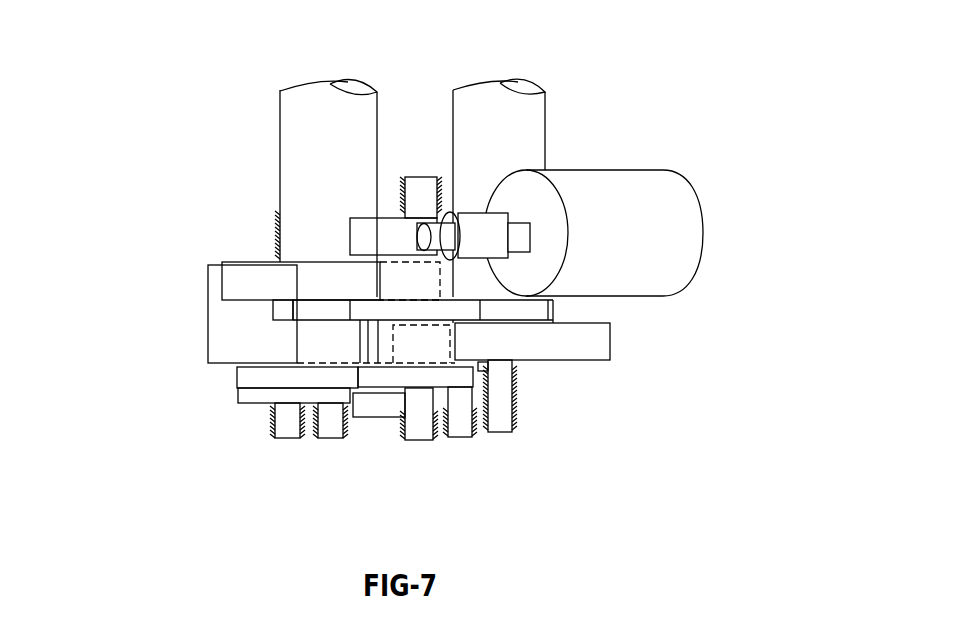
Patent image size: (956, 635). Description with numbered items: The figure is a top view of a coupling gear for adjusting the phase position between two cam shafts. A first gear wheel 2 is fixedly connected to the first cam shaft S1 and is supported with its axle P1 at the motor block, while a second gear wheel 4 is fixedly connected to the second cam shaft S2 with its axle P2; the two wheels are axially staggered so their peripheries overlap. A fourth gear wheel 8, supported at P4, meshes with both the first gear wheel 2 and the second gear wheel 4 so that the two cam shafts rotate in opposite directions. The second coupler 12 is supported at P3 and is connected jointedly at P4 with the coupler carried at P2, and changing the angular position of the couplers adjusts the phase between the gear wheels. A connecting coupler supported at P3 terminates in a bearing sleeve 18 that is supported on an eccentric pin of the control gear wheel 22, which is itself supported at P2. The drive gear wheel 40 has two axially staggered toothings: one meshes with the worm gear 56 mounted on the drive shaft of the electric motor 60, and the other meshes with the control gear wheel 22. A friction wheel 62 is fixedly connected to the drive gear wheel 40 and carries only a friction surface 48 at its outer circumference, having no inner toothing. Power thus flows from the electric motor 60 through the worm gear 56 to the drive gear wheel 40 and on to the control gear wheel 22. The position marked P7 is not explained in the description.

The first gear wheel 2 is at (610, 345).
The second gear wheel 4 is at (270, 278).
The fourth gear wheel 8 is at (232, 330).
The second coupler 12 is at (377, 415).
The bearing sleeve 18 is at (258, 395).
The control gear wheel 22 is at (250, 378).
The drive gear wheel 40 is at (388, 228).
The friction surface 48 is at (548, 314).
The worm gear 56 is at (485, 227).
The electric motor 60 is at (607, 190).
The friction wheel 62 is at (527, 308).
The first cam shaft S1 is at (484, 102).
The second cam shaft S2 is at (307, 122).
The axle of the first cam shaft P1 is at (505, 420).
The axle of the second cam shaft P2 is at (330, 427).
The support point of the third gear wheel P3 is at (460, 425).
The joint of the second and third couplers P4 is at (292, 422).
The pin P7 is at (418, 428).